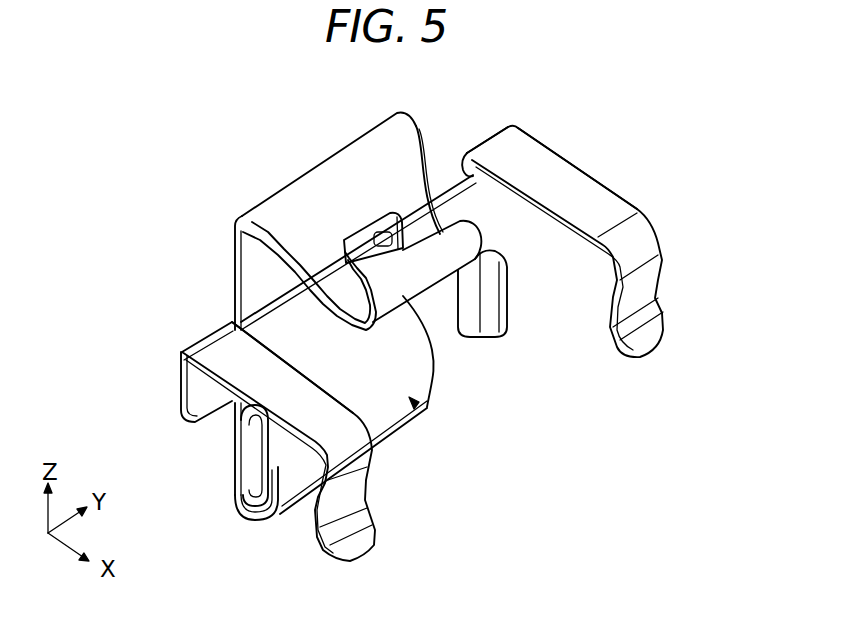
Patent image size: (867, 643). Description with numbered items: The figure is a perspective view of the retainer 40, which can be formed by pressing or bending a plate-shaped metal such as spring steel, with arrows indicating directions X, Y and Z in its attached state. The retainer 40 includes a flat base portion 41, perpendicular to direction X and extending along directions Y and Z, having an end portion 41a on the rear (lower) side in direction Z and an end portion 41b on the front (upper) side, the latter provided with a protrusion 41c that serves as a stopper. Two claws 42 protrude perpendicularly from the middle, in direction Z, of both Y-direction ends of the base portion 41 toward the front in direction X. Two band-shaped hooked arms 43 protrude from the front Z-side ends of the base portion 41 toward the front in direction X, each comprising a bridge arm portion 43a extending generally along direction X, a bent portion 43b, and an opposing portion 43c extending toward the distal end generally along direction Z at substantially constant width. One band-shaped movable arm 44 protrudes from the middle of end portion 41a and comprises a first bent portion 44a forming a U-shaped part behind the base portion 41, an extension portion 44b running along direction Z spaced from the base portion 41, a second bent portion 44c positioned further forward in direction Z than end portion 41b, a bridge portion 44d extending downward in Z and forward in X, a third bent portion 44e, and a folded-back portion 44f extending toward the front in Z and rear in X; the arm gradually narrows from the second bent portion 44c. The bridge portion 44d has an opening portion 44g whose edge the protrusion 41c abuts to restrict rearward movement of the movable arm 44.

The retainer 40 is at (629, 115).
The base portion 41 is at (429, 410).
The end portion 41a is at (307, 507).
The end portion 41b is at (205, 390).
The protrusion 41c is at (370, 227).
The claw 42 is at (492, 303).
The hooked arm 43 is at (626, 196).
The bridge arm portion 43a is at (538, 152).
The bent portion 43b is at (652, 234).
The opposing portion 43c is at (647, 279).
The movable arm 44 is at (222, 236).
The first bent portion 44a is at (255, 523).
The extension portion 44b is at (233, 286).
The second bent portion 44c is at (312, 183).
The bridge portion 44d is at (409, 170).
The third bent portion 44e is at (434, 348).
The folded-back portion 44f is at (431, 257).
The opening portion 44g is at (343, 253).